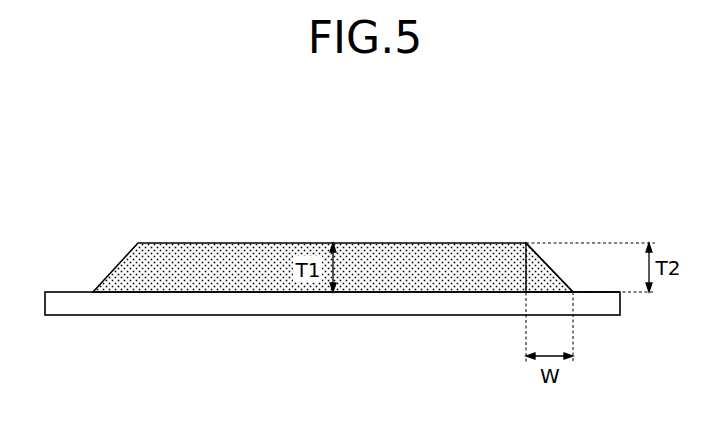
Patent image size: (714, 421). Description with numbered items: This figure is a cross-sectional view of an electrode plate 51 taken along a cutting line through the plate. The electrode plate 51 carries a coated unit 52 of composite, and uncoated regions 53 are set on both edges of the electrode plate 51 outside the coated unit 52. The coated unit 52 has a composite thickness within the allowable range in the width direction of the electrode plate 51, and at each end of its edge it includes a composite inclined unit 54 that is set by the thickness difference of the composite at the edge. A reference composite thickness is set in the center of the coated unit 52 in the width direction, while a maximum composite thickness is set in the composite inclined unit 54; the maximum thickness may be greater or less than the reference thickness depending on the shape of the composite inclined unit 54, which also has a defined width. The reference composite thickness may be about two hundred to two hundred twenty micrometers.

The electrode plate 51 is at (250, 304).
The coated unit 52 is at (427, 260).
The uncoated region 53 is at (594, 291).
The composite inclined unit 54 is at (542, 275).